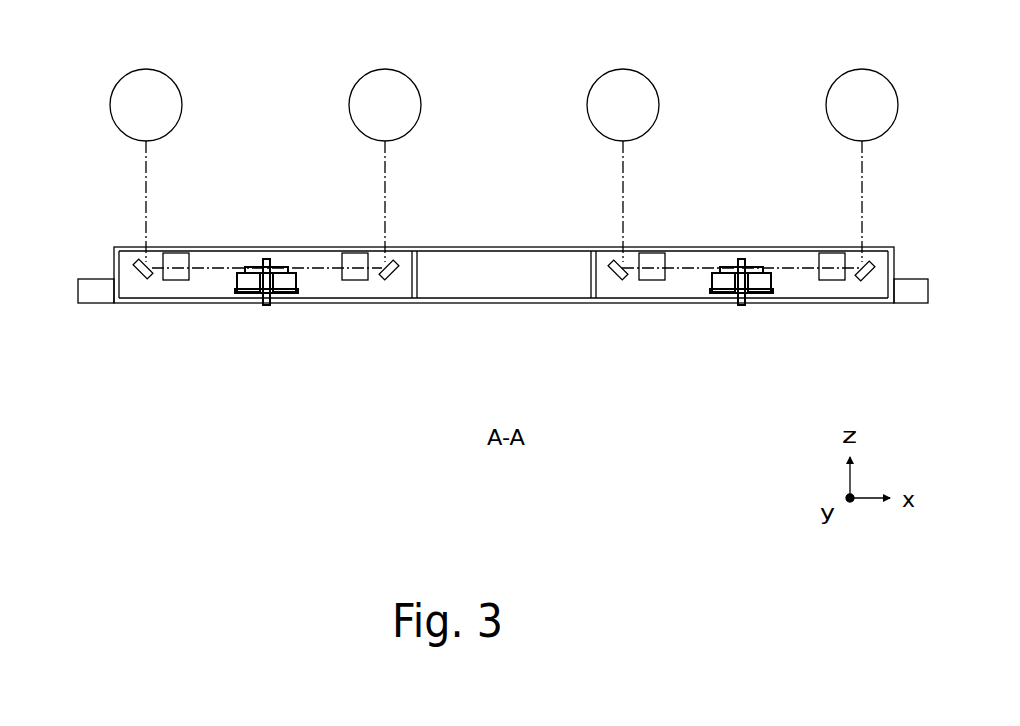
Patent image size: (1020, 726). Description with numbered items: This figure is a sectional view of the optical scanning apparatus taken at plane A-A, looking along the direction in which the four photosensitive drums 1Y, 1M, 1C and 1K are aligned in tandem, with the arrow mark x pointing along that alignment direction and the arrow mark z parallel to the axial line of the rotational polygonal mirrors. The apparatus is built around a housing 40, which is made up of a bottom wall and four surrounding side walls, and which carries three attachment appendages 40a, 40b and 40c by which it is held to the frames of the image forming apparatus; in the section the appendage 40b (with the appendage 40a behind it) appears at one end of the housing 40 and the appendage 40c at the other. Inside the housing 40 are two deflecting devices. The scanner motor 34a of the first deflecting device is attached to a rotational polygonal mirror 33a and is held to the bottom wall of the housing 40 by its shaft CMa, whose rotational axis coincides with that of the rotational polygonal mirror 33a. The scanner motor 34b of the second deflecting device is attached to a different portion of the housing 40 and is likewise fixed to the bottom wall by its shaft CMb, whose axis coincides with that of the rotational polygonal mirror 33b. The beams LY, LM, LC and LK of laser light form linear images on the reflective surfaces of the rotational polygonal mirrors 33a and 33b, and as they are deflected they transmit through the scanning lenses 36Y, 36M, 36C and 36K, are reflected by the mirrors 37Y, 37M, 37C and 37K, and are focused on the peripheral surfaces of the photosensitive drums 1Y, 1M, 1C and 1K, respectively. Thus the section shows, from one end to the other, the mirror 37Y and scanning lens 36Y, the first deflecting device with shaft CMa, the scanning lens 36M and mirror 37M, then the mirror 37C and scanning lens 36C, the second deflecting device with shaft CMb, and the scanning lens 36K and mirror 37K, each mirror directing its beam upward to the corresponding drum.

The photosensitive drum 1Y is at (116, 89).
The photosensitive drum 1M is at (357, 84).
The photosensitive drum 1C is at (612, 72).
The photosensitive drum 1K is at (848, 74).
The beam of laser light LY is at (146, 181).
The beam of laser light LM is at (386, 180).
The beam of laser light LC is at (623, 180).
The beam of laser light LK is at (862, 180).
The rotational polygonal mirror 33a is at (275, 264).
The rotational polygonal mirror 33b is at (755, 265).
The scanner motor 34a is at (268, 257).
The scanner motor 34b is at (742, 257).
The scanning lens 36Y is at (177, 281).
The scanning lens 36M is at (355, 281).
The scanning lens 36C is at (653, 281).
The scanning lens 36K is at (831, 281).
The mirror 37Y is at (148, 278).
The mirror 37M is at (393, 280).
The mirror 37C is at (612, 278).
The mirror 37K is at (870, 280).
The housing 40 is at (438, 303).
The attachment appendage 40a is at (65, 343).
The attachment appendage 40b is at (90, 303).
The attachment appendage 40c is at (907, 303).
The shaft CMa is at (268, 294).
The shaft CMb is at (739, 279).